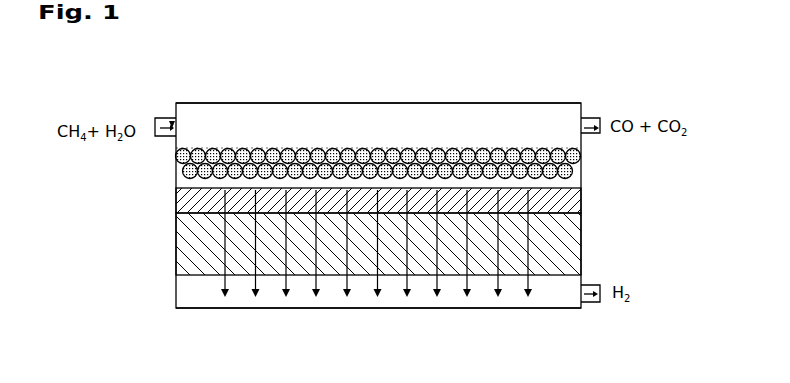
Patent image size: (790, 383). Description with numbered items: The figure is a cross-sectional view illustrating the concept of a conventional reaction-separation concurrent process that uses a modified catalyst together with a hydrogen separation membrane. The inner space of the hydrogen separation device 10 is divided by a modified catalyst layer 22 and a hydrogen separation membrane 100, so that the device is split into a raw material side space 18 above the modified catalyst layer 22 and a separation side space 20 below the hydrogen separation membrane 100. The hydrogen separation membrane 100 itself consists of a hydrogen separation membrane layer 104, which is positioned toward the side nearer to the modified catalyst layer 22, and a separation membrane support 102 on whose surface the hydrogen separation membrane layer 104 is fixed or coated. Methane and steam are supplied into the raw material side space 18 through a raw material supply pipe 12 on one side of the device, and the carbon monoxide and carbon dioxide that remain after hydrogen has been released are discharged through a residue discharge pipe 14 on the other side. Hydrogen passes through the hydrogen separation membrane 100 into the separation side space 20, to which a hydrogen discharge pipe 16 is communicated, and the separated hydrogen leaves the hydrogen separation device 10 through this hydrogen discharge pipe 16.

The hydrogen separation device 10 is at (529, 103).
The raw material supply pipe 12 is at (160, 118).
The residue discharge pipe 14 is at (583, 120).
The hydrogen discharge pipe 16 is at (596, 302).
The raw material side space 18 is at (378, 120).
The separation side space 20 is at (395, 300).
The modified catalyst layer 22 is at (582, 156).
The hydrogen separation membrane 100 is at (656, 236).
The separation membrane support 102 is at (582, 245).
The hydrogen separation membrane layer 104 is at (582, 200).